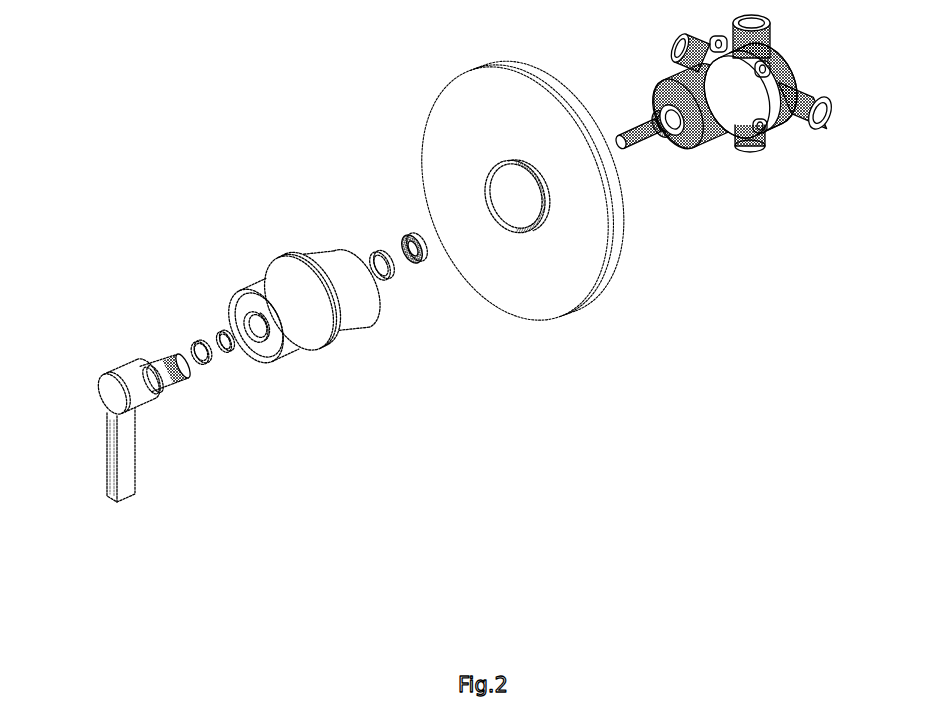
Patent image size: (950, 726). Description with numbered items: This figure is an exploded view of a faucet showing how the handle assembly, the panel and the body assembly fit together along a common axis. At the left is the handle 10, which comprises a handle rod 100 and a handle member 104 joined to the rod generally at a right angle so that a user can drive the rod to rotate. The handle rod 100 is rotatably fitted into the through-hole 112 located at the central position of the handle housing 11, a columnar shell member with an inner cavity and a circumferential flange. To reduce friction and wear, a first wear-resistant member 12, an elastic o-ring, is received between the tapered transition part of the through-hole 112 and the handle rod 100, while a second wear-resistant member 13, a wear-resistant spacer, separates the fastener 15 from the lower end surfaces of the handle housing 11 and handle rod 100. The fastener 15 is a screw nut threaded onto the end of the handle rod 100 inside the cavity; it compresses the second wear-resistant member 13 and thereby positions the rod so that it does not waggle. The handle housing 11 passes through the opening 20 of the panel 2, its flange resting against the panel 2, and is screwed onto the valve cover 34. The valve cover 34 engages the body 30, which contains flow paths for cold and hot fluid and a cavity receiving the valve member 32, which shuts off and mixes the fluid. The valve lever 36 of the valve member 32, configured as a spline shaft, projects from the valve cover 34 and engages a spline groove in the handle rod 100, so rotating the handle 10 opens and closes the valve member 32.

The panel 2 is at (565, 287).
The handle 10 is at (97, 363).
The handle housing 11 is at (274, 289).
The first wear-resistant member 12 is at (200, 345).
The second wear-resistant member 13 is at (386, 272).
The fastener 15 is at (410, 243).
The opening 20 is at (512, 187).
The body 30 is at (793, 83).
The valve member 32 is at (675, 100).
The valve cover 34 is at (723, 103).
The valve lever 36 is at (640, 145).
The handle rod 100 is at (162, 368).
The handle member 104 is at (125, 457).
The through-hole 112 is at (259, 330).